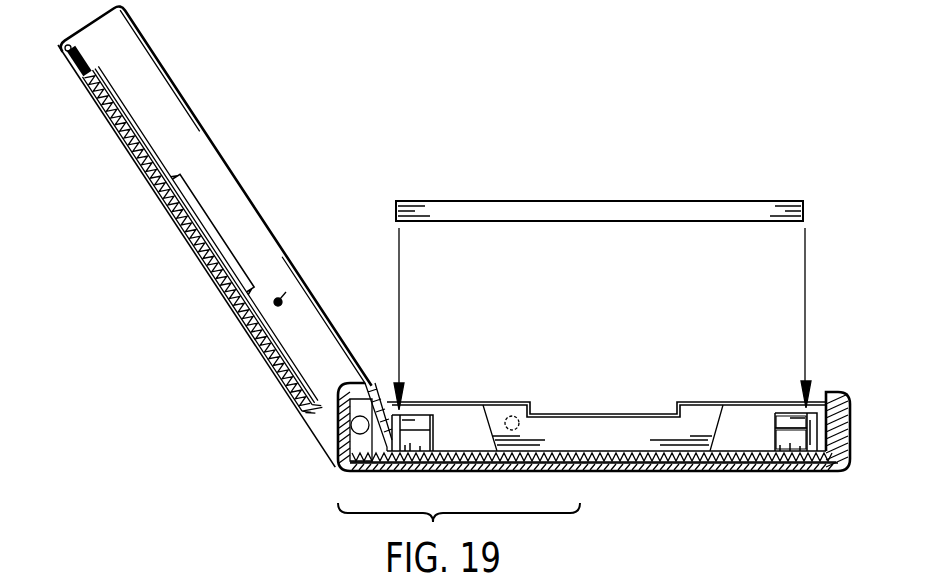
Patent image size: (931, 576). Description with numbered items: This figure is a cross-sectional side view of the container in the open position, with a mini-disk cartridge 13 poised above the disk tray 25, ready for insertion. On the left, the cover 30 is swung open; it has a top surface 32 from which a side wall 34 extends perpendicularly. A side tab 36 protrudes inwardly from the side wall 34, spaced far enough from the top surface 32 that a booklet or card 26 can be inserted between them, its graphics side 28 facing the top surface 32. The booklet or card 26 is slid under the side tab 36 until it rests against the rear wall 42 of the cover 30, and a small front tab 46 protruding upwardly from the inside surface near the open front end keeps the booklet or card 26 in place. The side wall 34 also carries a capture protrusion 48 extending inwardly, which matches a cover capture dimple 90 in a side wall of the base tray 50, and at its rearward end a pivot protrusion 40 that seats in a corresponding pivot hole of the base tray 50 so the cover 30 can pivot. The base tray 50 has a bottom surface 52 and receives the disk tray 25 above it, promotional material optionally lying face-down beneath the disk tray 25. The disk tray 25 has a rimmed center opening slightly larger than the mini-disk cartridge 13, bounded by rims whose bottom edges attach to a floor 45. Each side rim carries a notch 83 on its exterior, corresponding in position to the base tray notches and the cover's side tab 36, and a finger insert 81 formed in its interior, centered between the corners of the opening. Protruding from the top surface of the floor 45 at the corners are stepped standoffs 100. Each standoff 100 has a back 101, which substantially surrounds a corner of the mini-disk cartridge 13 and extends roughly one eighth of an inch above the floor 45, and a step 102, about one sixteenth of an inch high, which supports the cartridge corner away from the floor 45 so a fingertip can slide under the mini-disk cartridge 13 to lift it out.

The mini-disk cartridge 13 is at (466, 204).
The disk tray 25 is at (483, 404).
The booklet or card 26 is at (147, 143).
The graphics side 28 is at (183, 247).
The cover 30 is at (207, 135).
The top surface 32 is at (237, 317).
The side wall 34 is at (264, 222).
The side tab 36 is at (207, 223).
The pivot protrusion 40 is at (357, 430).
The rear wall 42 is at (310, 409).
The floor 45 is at (568, 450).
The front tab 46 is at (72, 48).
The capture protrusion 48 is at (279, 283).
The base tray 50 is at (637, 467).
The bottom surface 52 is at (725, 473).
The finger insert 81 is at (695, 413).
The notch 83 is at (642, 413).
The cover capture dimple 90 is at (513, 405).
The stepped standoff 100 is at (420, 414).
The back 101 is at (777, 421).
The step 102 is at (783, 436).